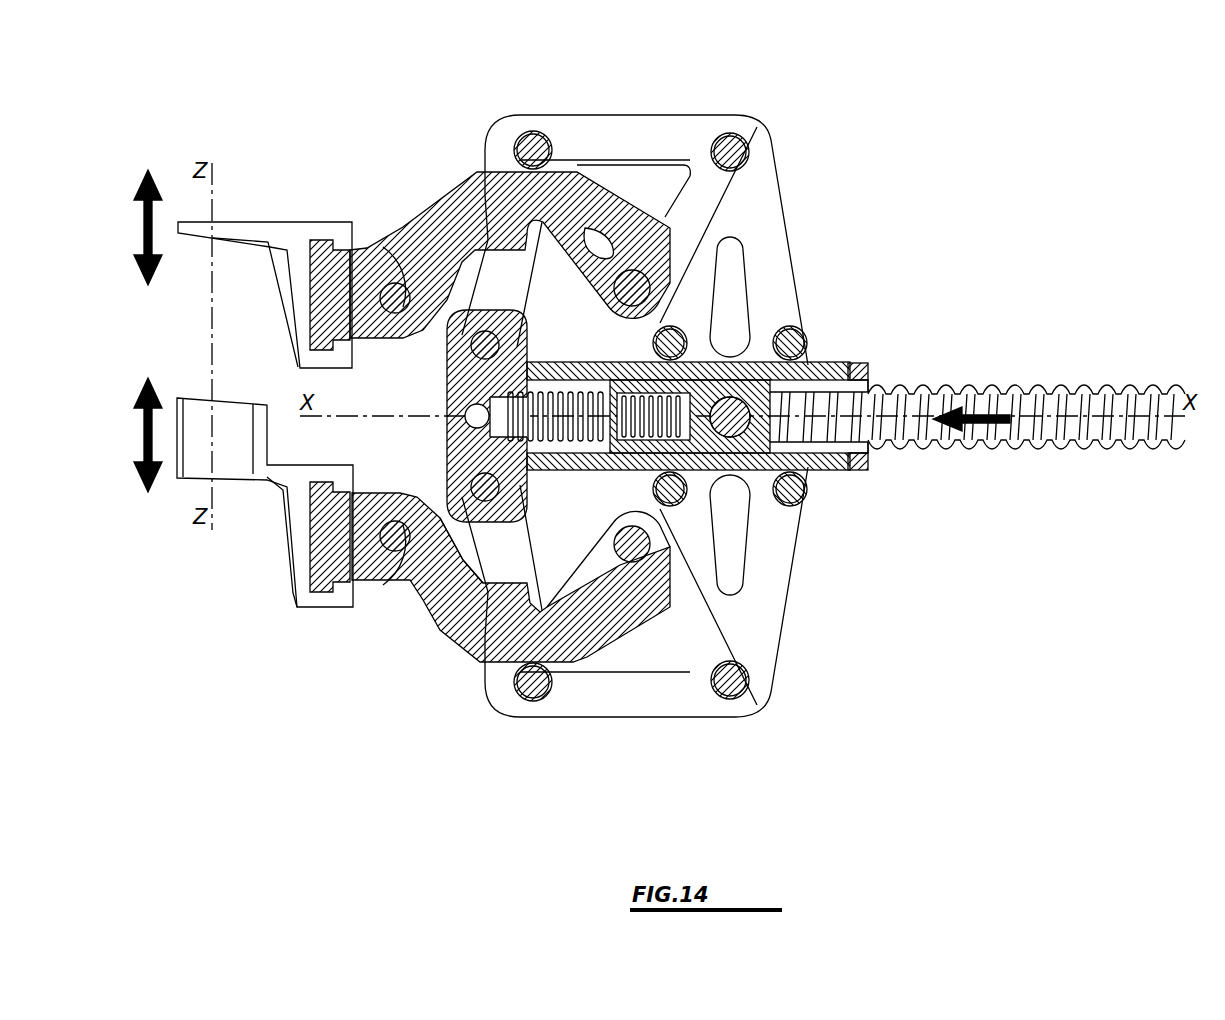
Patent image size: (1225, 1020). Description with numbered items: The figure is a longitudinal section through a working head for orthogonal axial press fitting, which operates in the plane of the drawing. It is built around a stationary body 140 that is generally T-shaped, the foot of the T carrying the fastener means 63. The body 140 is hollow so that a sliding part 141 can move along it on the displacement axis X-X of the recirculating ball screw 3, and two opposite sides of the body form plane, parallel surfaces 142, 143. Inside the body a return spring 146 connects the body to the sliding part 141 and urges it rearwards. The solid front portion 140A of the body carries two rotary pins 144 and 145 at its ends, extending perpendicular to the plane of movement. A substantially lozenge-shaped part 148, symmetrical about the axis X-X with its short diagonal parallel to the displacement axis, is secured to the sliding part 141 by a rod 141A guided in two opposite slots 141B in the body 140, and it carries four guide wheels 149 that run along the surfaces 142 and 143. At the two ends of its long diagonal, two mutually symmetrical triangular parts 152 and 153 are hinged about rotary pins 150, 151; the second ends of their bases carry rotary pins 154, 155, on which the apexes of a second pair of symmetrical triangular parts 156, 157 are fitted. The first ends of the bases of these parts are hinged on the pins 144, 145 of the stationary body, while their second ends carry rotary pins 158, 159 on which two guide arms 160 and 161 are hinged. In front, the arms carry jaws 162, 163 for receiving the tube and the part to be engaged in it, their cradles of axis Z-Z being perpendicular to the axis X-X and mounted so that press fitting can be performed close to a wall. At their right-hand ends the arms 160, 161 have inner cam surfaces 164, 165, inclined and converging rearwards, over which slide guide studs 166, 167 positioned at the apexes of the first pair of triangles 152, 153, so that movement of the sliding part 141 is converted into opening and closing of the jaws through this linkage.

The recirculating ball screw 3 is at (1052, 384).
The fastener means 63 is at (892, 338).
The stationary body 140 is at (440, 410).
The solid front portion 140A is at (433, 577).
The sliding part 141 is at (805, 376).
The rod 141A is at (858, 452).
The slots 141B is at (808, 478).
The plane surface 142 is at (577, 350).
The plane surface 143 is at (591, 467).
The rotary pin 144 is at (462, 378).
The rotary pin 145 is at (458, 470).
The return spring 146 is at (543, 473).
The lozenge-shaped part 148 is at (790, 213).
The guide wheels 149 is at (692, 330).
The rotary pin 150 is at (748, 128).
The rotary pin 151 is at (755, 702).
The triangular part 152 is at (668, 130).
The triangular part 153 is at (712, 713).
The rotary pin 154 is at (527, 128).
The rotary pin 155 is at (524, 715).
The triangular part 156 is at (462, 215).
The triangular part 157 is at (485, 630).
The rotary pin 158 is at (400, 280).
The rotary pin 159 is at (400, 553).
The guide arm 160 is at (488, 190).
The guide arm 161 is at (492, 635).
The jaw 162 is at (242, 214).
The jaw 163 is at (238, 500).
The inner cam surface 164 is at (590, 240).
The inner cam surface 165 is at (585, 575).
The guide stud 166 is at (665, 283).
The guide stud 167 is at (635, 565).